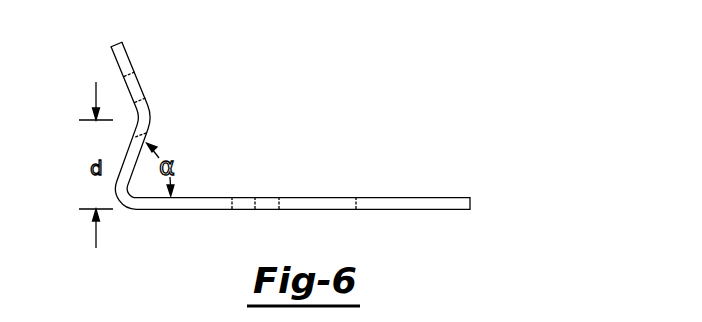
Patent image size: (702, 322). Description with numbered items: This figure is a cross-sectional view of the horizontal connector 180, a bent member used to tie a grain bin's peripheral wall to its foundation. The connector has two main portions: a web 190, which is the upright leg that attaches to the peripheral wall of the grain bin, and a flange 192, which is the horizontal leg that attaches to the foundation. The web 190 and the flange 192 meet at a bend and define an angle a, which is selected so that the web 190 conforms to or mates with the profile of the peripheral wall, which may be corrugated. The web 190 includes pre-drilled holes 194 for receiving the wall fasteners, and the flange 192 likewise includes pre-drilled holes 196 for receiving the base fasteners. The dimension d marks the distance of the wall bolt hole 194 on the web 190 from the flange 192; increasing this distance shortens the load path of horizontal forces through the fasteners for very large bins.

The horizontal connector 180 is at (363, 88).
The web 190 is at (130, 77).
The flange 192 is at (411, 203).
The pre-drilled holes 194 is at (151, 118).
The pre-drilled holes 196 is at (255, 197).